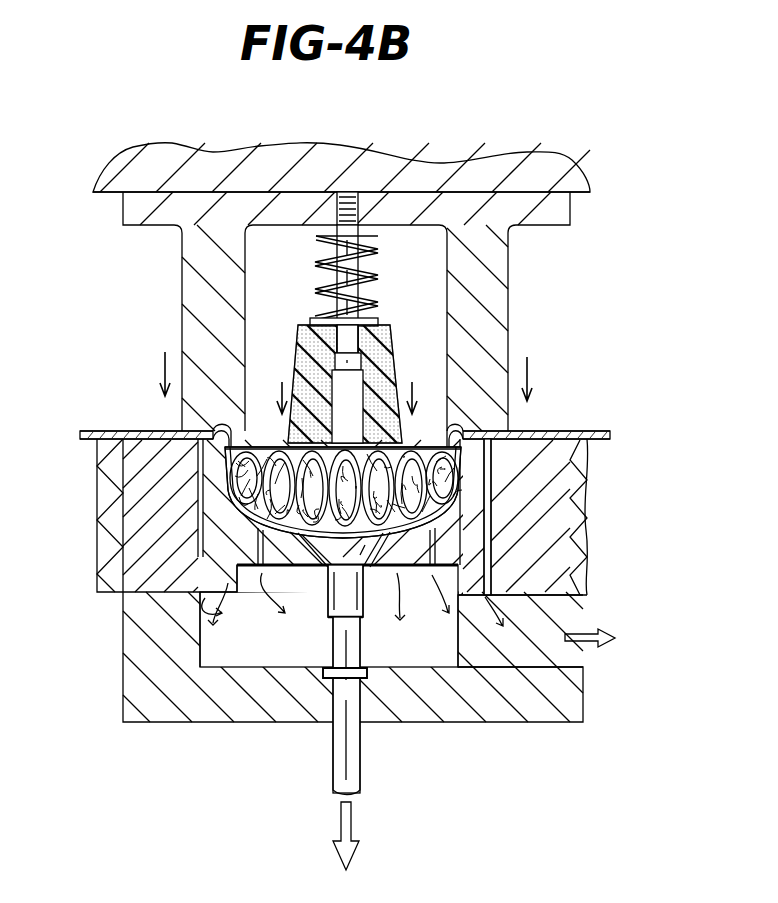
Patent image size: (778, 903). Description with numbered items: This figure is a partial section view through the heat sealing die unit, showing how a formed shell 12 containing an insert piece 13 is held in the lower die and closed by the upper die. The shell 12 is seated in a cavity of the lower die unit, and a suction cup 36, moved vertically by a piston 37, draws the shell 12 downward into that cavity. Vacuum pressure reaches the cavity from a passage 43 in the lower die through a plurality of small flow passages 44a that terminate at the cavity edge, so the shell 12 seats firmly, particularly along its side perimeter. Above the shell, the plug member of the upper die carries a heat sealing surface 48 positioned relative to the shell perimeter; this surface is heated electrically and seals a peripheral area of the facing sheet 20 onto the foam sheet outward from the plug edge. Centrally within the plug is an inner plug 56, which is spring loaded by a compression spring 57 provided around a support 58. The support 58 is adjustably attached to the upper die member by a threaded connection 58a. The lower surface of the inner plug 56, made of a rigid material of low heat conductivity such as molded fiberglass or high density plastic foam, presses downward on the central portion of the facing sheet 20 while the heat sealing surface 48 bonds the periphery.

The formed shell 12 is at (230, 492).
The insert piece 13 is at (235, 470).
The facing sheet 20 is at (452, 432).
The suction cup 36 is at (388, 575).
The piston 37 is at (362, 768).
The passage 43 is at (568, 658).
The flow passage 44a is at (245, 605).
The heat sealing surface 48 is at (490, 436).
The inner plug 56 is at (393, 345).
The compression spring 57 is at (380, 252).
The support 58 is at (366, 278).
The threaded connection 58a is at (388, 192).